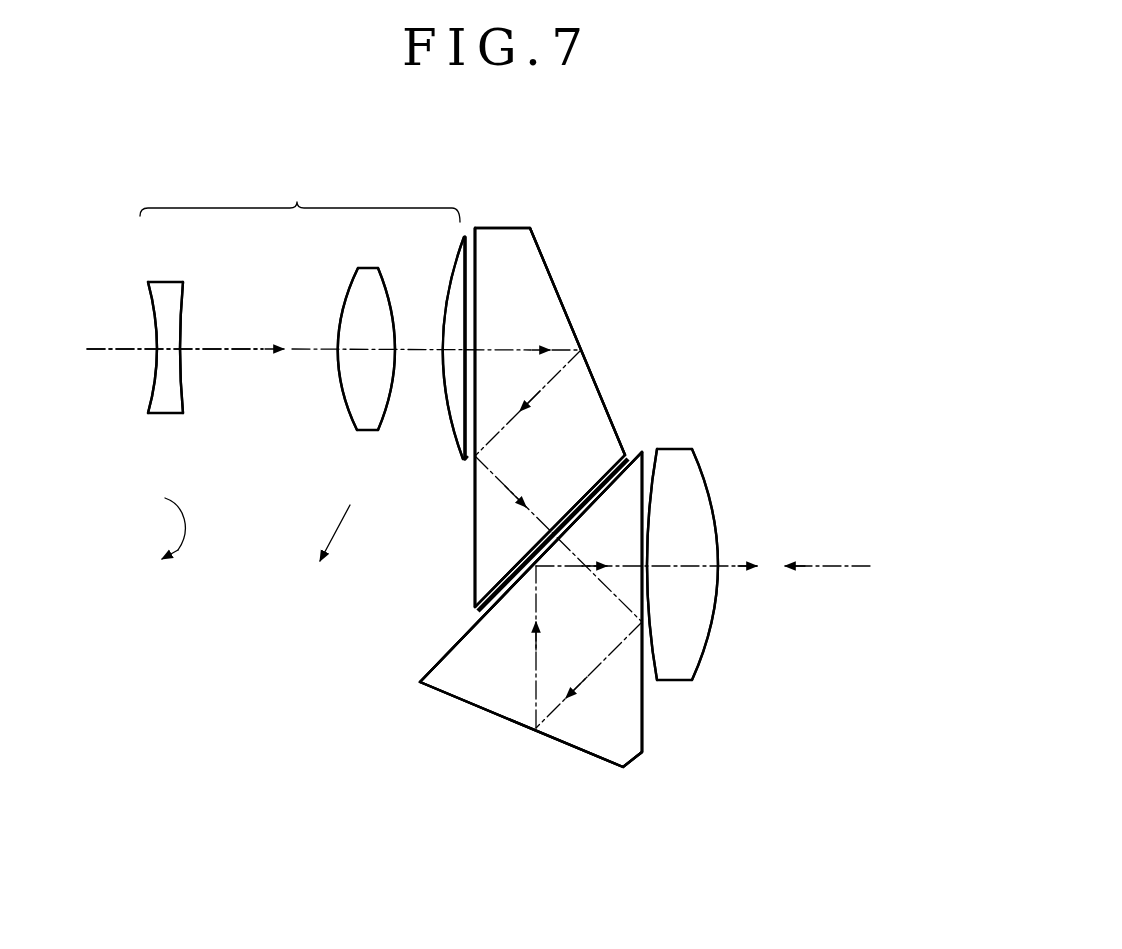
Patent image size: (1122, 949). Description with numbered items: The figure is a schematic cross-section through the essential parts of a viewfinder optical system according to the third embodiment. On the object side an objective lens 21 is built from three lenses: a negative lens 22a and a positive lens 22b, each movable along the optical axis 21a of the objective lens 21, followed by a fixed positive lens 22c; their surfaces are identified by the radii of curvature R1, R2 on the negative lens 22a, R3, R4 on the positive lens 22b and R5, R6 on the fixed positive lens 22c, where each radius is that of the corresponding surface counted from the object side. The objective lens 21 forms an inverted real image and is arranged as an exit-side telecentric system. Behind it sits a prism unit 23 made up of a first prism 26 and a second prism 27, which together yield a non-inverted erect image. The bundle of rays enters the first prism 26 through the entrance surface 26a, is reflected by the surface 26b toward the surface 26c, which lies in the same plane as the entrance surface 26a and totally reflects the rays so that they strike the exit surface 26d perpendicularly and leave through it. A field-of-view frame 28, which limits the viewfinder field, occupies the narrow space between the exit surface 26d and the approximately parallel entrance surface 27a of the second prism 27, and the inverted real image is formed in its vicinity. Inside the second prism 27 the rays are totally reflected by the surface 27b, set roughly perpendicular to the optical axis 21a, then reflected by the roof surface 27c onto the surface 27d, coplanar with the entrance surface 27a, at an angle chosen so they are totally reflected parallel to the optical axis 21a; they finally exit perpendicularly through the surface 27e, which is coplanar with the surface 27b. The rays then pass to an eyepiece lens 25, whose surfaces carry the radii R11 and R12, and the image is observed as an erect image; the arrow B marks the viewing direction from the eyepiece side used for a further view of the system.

The objective lens 21 is at (300, 194).
The optical axis 21a is at (104, 347).
The negative lens 22a is at (167, 280).
The positive lens 22b is at (347, 283).
The fixed positive lens 22c is at (448, 278).
The prism unit 23 is at (647, 202).
The eyepiece lens 25 is at (695, 476).
The first prism 26 is at (528, 275).
The entrance surface 26a is at (479, 256).
The surface 1-2 26b is at (555, 277).
The surface 1-3 26c is at (511, 374).
The exit surface 26d is at (603, 470).
The second prism 27 is at (447, 678).
The entrance surface 27a is at (460, 643).
The surface 2-2 27b is at (645, 722).
The roof surface 27c is at (560, 743).
The surface 2-4 27d is at (499, 567).
The exit surface 27e is at (640, 502).
The field-of-view frame 28 is at (636, 447).
The arrow B is at (827, 548).
The radius of curvature of first lens surface R1 is at (150, 392).
The radius of curvature of second lens surface R2 is at (180, 392).
The radius of curvature of third lens surface R3 is at (342, 403).
The radius of curvature of fourth lens surface R4 is at (392, 407).
The radius of curvature of fifth lens surface R5 is at (448, 432).
The radius of curvature of sixth lens surface R6 is at (470, 460).
The radius of curvature of eleventh lens surface R11 is at (653, 660).
The radius of curvature of twelfth lens surface R12 is at (717, 615).